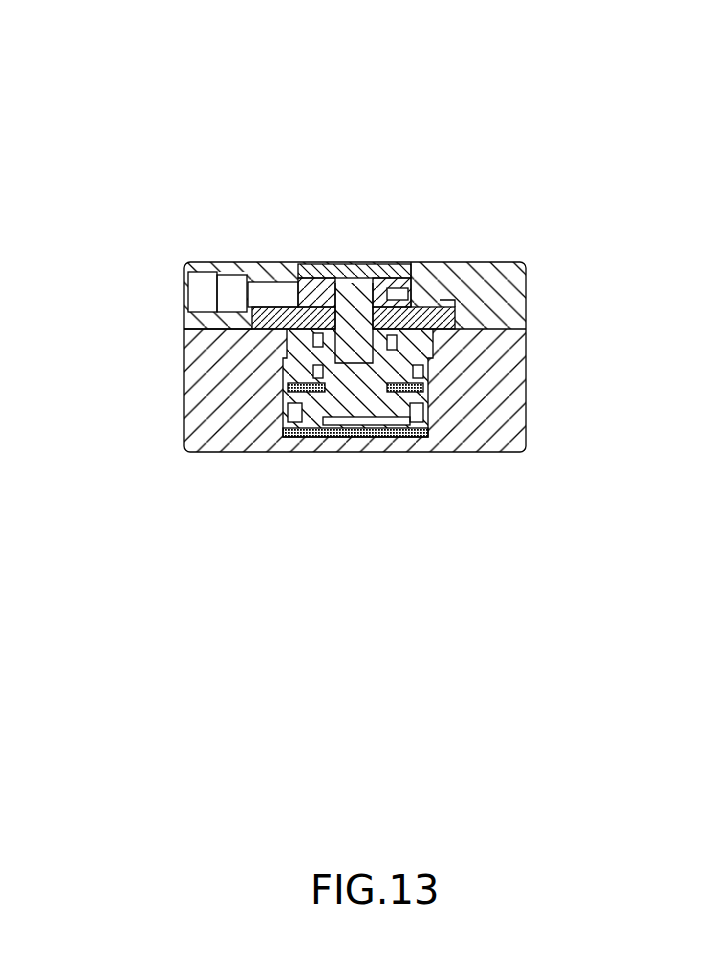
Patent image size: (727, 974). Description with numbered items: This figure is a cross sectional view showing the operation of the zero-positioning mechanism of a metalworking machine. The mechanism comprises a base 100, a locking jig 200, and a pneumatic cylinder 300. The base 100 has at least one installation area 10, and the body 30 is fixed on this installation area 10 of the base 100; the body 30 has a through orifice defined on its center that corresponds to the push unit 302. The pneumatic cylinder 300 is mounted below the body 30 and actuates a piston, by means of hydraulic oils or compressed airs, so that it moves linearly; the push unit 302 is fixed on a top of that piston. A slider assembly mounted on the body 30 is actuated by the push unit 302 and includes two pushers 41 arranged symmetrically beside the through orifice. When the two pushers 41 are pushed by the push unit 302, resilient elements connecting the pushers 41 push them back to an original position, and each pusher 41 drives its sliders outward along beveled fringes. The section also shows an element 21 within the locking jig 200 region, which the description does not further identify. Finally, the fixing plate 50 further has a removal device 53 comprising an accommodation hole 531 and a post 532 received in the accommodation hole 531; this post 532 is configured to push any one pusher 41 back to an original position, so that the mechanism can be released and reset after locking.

The locking jig 200 is at (209, 120).
The base 100 is at (489, 459).
The installation area 10 is at (352, 438).
The valve core 21 is at (420, 393).
The body 30 is at (455, 307).
The pneumatic cylinder 300 is at (465, 326).
The push unit 302 is at (360, 264).
The pusher 41 is at (320, 264).
The fixing plate 50 is at (506, 262).
The removal device 53 is at (113, 153).
The accommodation hole 531 is at (188, 270).
The post 532 is at (223, 277).